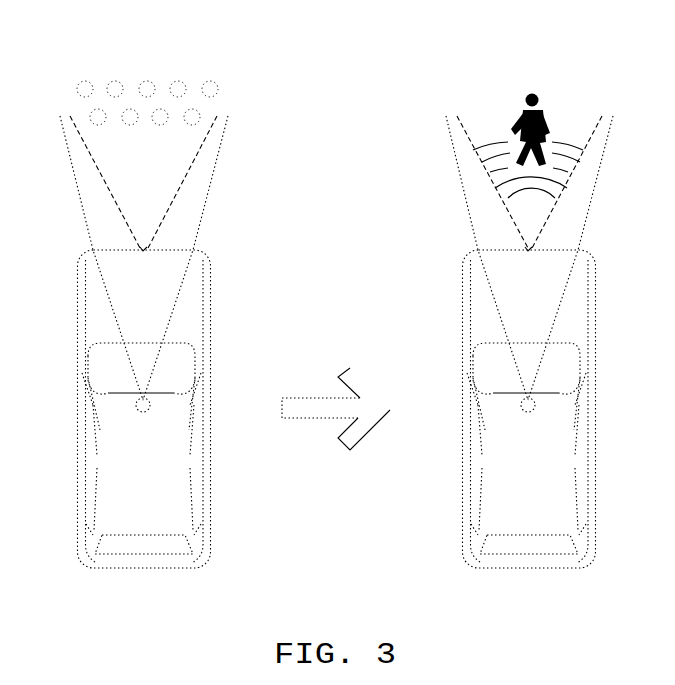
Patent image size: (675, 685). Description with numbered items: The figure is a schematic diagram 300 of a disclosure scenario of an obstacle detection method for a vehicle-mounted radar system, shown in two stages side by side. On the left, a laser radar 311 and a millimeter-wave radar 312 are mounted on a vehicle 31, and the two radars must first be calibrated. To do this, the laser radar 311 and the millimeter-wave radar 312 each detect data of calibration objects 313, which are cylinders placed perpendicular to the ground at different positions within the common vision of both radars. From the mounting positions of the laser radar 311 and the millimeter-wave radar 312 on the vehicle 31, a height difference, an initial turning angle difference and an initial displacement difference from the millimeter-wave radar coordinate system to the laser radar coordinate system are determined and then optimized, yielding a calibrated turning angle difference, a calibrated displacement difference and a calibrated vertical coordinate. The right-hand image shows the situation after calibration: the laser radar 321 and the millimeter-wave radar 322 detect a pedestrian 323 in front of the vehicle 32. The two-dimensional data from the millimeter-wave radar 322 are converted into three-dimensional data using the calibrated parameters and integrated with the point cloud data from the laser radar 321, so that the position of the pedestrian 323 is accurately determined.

The schematic diagram 300 is at (393, 41).
The vehicle 31 is at (197, 305).
The laser radar 311 is at (110, 393).
The millimeter-wave radar 312 is at (135, 246).
The calibration objects 313 is at (216, 88).
The vehicle 32 is at (577, 308).
The laser radar 321 is at (537, 403).
The millimeter-wave radar 322 is at (531, 249).
The pedestrian 323 is at (547, 103).